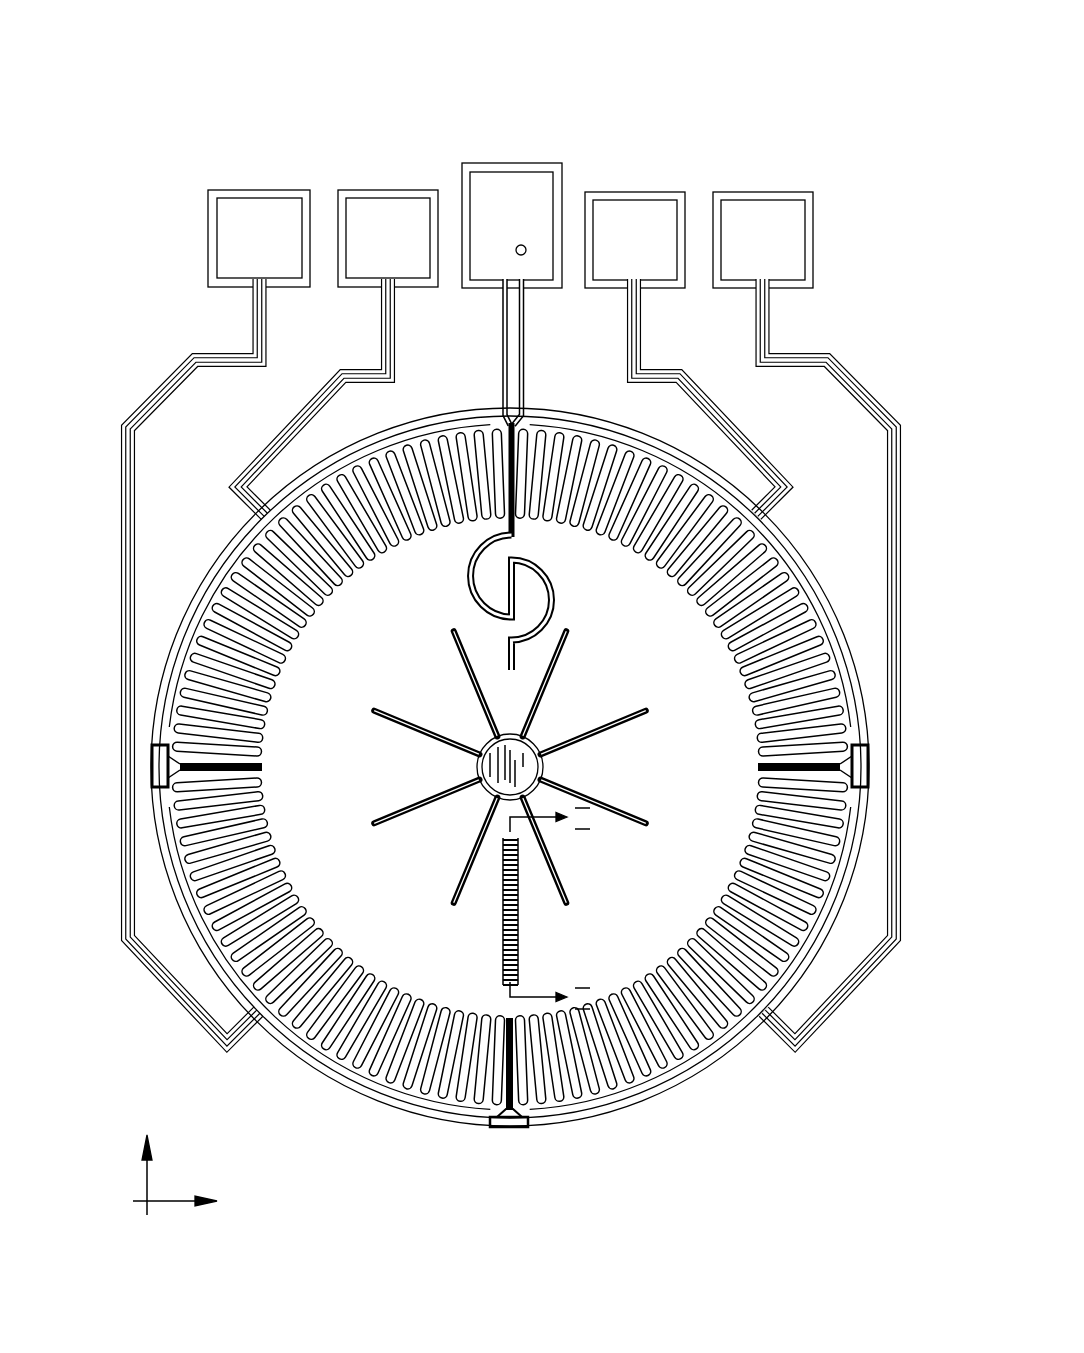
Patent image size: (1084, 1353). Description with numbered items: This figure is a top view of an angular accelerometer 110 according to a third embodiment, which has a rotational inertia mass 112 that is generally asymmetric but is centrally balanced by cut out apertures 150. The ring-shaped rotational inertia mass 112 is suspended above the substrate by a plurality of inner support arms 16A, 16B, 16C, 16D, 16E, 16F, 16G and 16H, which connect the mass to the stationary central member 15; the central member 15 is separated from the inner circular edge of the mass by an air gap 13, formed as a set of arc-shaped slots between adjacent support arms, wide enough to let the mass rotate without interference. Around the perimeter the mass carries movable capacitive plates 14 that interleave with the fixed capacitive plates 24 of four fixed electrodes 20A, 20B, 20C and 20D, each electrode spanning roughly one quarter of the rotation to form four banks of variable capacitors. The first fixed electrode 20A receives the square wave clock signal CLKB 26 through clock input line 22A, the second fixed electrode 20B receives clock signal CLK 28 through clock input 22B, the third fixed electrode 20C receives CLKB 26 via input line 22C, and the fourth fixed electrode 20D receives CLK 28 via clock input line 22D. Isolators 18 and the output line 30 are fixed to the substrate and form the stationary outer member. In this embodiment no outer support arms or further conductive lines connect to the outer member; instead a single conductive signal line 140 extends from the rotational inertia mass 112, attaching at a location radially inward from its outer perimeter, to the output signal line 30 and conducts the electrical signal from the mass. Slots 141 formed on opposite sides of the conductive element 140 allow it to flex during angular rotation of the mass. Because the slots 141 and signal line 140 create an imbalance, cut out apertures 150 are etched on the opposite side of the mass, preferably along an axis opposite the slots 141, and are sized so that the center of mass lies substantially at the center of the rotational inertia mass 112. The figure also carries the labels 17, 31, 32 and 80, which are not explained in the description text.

The angular accelerometer 110 is at (820, 60).
The rotational inertia mass 112 is at (510, 798).
The air gap 13 is at (481, 762).
The movable capacitive plates 14 is at (372, 992).
The central member 15 is at (512, 757).
The inner support arm 16A is at (510, 769).
The inner support arm 16B is at (563, 633).
The inner support arm 16C is at (642, 715).
The inner support arm 16D is at (640, 830).
The inner support arm 16E is at (563, 892).
The inner support arm 16F is at (460, 897).
The inner support arm 16G is at (400, 804).
The inner support arm 16H is at (380, 714).
The spoke flexure 17 is at (478, 686).
The isolators 18 is at (152, 770).
The first fixed electrode 20A is at (228, 578).
The second fixed electrode 20B is at (780, 575).
The third fixed electrode 20C is at (735, 1032).
The fourth fixed electrode 20D is at (300, 1040).
The clock input line 22A is at (290, 438).
The clock input 22B is at (730, 437).
The input line 22C is at (808, 990).
The clock input line 22D is at (165, 972).
The fixed capacitive plates 24 is at (510, 798).
The clock signal CLKB 26 is at (372, 200).
The clock signal CLK 28 is at (245, 200).
The output signal line 30 is at (513, 343).
The output lead stem 31 is at (525, 388).
The output pad 32 is at (497, 170).
The output electrode ring 80 is at (510, 632).
The conductive signal line 140 is at (499, 600).
The slots 141 is at (498, 531).
The cut out apertures 150 is at (502, 950).